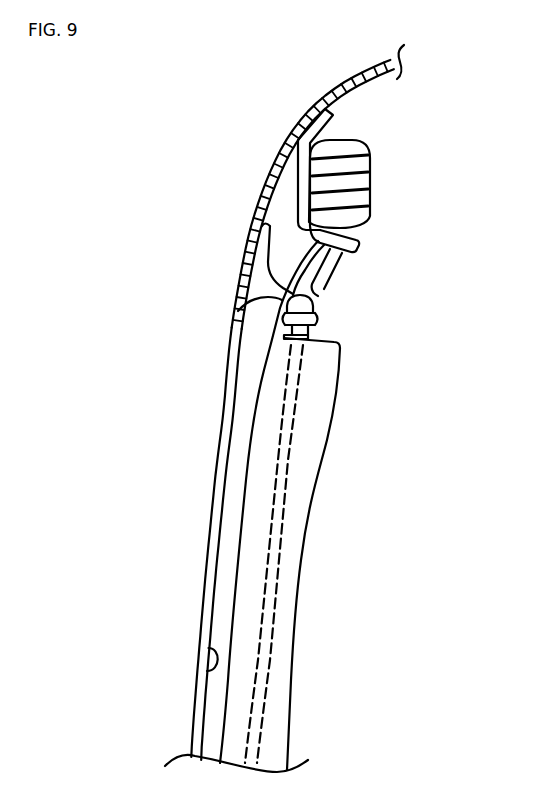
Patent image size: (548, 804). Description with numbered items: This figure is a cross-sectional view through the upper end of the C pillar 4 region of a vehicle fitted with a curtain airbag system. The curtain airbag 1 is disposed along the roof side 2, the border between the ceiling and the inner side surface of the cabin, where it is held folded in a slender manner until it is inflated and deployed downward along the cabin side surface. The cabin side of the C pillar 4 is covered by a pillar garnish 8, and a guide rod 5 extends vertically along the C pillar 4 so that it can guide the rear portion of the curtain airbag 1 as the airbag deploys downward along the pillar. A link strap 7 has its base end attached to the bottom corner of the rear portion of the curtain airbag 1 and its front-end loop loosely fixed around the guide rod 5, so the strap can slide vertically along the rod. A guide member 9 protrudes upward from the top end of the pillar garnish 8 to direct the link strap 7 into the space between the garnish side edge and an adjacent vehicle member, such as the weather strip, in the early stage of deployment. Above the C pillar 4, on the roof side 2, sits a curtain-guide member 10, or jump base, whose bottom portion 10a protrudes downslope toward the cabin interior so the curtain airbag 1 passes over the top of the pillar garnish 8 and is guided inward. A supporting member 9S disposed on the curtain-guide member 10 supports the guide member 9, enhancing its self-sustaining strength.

The curtain airbag 1 is at (414, 178).
The roof side 2 is at (262, 183).
The C pillar 4 is at (207, 665).
The guide rod 5 is at (262, 698).
The link strap 7 is at (238, 311).
The pillar garnish 8 is at (289, 571).
The guide member 9 is at (318, 294).
The supporting member 9S is at (340, 266).
The curtain-guide member 10 is at (298, 208).
The bottom portion 10a is at (357, 241).